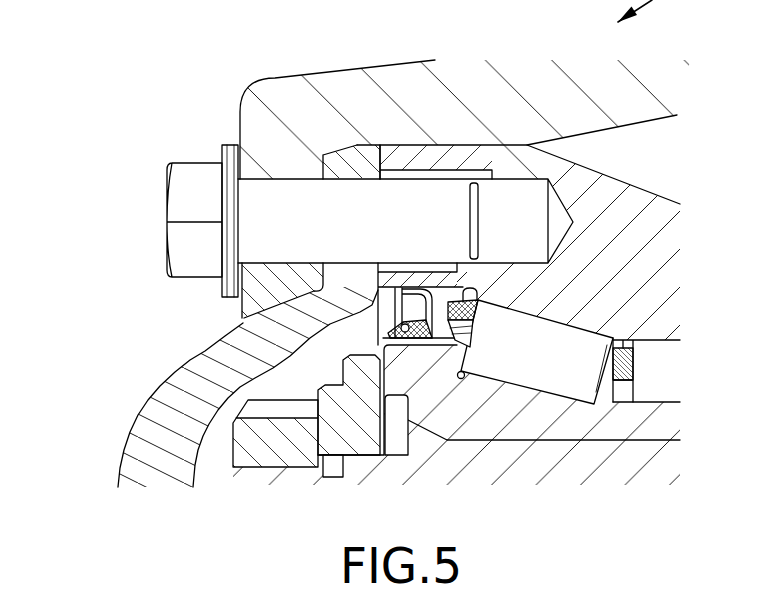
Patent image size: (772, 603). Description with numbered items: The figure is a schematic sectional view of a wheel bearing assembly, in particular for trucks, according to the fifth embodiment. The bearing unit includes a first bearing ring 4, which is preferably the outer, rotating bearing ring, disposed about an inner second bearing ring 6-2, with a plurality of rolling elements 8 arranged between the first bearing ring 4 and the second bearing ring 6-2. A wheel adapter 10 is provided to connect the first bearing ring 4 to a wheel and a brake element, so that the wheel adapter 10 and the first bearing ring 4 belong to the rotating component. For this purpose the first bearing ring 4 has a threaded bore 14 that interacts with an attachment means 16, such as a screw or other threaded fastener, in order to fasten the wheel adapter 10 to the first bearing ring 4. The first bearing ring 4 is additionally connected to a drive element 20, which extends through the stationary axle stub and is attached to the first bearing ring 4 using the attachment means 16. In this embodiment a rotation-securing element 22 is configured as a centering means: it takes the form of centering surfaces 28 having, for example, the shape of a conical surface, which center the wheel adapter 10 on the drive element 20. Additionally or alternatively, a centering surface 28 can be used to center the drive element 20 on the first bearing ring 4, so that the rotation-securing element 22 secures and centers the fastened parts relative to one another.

The first bearing ring 4 is at (658, 214).
The second bearing ring 6-2 is at (523, 423).
The rolling elements 8 is at (597, 400).
The wheel adapter 10 is at (407, 82).
The threaded bore 14 is at (481, 176).
The attachment means 16 is at (185, 183).
The drive element 20 is at (147, 423).
The rotation-securing element 22 is at (140, 293).
The centering surfaces 28 is at (348, 157).